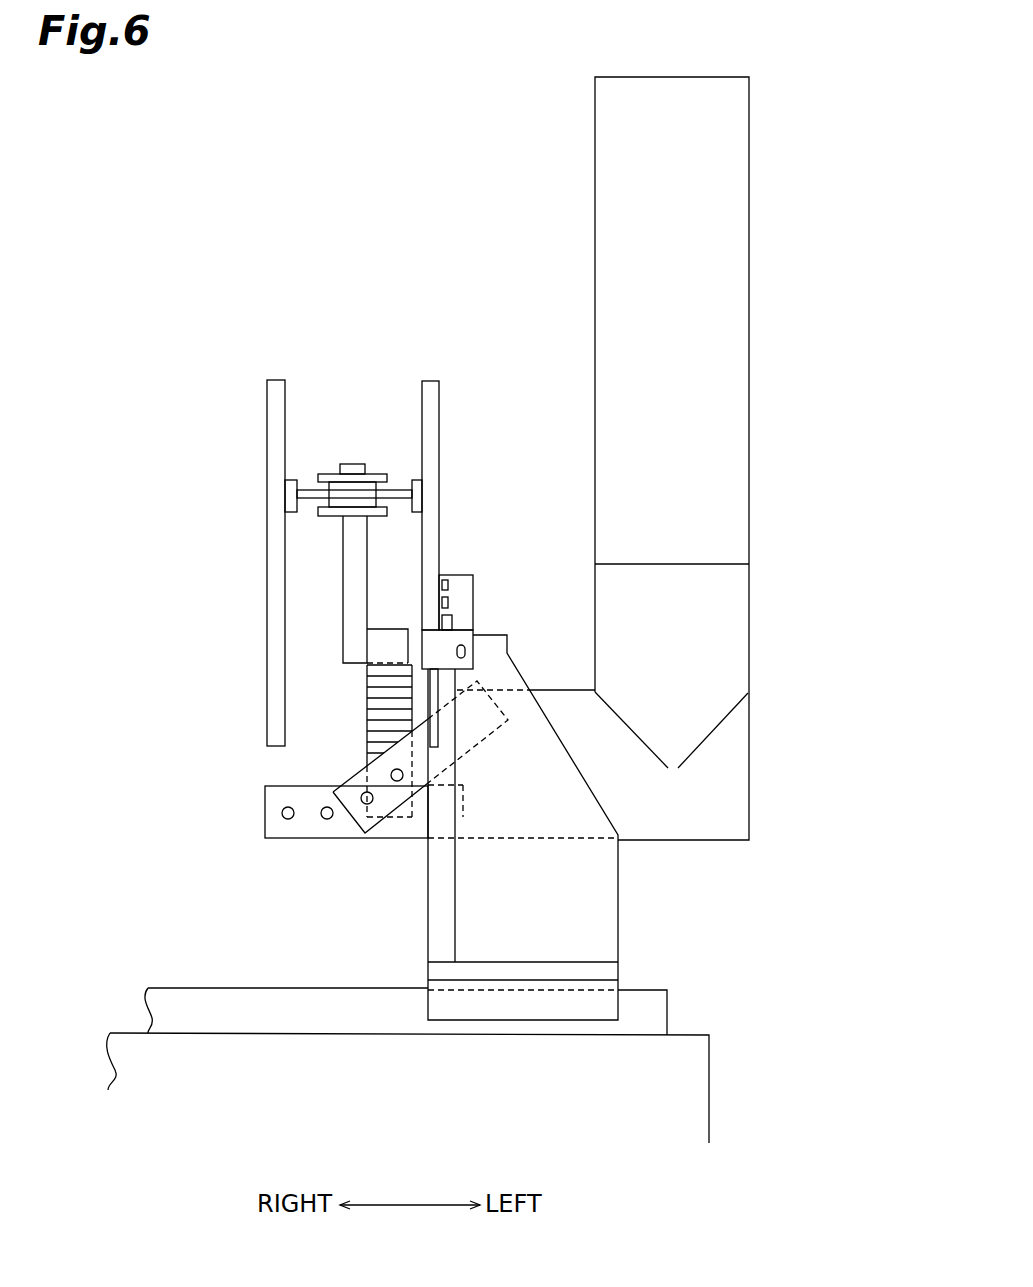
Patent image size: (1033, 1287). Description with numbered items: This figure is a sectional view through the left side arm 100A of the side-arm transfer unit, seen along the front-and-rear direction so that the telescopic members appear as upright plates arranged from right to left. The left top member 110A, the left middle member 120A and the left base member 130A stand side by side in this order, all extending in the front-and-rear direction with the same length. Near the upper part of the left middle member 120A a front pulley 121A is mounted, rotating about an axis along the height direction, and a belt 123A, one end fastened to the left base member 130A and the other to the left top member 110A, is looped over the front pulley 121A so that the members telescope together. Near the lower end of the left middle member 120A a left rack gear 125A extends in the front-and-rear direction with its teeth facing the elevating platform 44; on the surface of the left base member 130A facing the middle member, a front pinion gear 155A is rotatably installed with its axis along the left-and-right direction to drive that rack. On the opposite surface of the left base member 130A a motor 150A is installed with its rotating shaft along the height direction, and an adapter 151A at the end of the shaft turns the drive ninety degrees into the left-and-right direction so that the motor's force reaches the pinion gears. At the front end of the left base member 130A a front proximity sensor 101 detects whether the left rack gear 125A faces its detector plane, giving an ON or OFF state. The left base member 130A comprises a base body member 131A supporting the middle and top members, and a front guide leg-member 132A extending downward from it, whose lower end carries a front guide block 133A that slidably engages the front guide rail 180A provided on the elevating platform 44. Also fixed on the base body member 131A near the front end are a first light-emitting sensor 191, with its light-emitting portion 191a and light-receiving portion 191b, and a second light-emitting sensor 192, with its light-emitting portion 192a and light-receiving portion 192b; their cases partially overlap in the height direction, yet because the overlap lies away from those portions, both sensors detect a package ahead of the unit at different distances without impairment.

The left side arm 100A is at (447, 320).
The left top member 110A is at (275, 383).
The left middle member 120A is at (343, 580).
The front pulley 121A is at (375, 470).
The belt 123A is at (310, 492).
The left rack gear 125A is at (388, 648).
The left base member 130A is at (486, 551).
The base body member 131A is at (430, 460).
The front guide leg-member 132A is at (596, 827).
The front guide block 133A is at (618, 985).
The motor 150A is at (662, 458).
The adapter 151A is at (708, 770).
The front pinion gear 155A is at (370, 702).
The front guide rail 180A is at (653, 1013).
The front proximity sensor 101 is at (445, 640).
The first light-emitting sensor 191 is at (296, 857).
The light-emitting portion 191a is at (288, 820).
The light-receiving portion 191b is at (327, 820).
The second light-emitting sensor 192 is at (333, 816).
The light-emitting portion 192a is at (362, 792).
The light-receiving portion 192b is at (392, 771).
The elevating platform 44 is at (695, 1077).